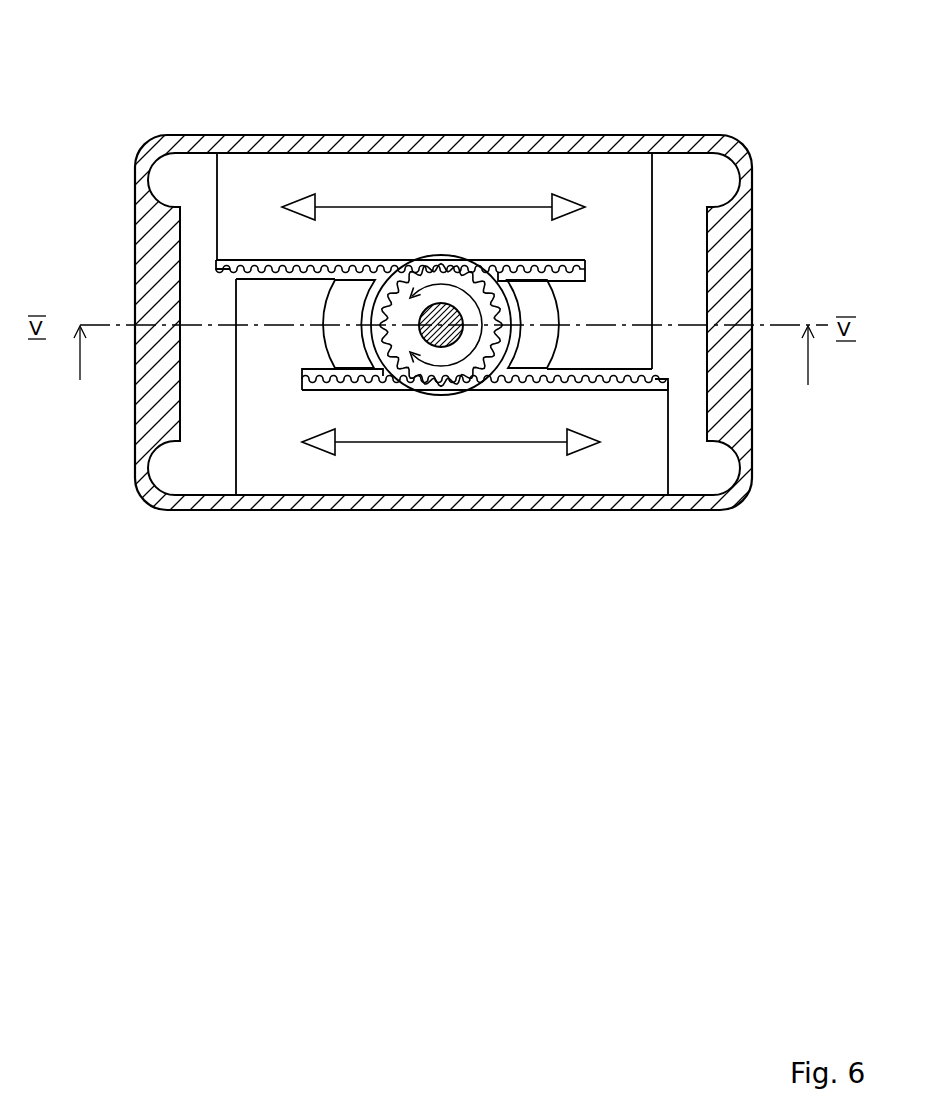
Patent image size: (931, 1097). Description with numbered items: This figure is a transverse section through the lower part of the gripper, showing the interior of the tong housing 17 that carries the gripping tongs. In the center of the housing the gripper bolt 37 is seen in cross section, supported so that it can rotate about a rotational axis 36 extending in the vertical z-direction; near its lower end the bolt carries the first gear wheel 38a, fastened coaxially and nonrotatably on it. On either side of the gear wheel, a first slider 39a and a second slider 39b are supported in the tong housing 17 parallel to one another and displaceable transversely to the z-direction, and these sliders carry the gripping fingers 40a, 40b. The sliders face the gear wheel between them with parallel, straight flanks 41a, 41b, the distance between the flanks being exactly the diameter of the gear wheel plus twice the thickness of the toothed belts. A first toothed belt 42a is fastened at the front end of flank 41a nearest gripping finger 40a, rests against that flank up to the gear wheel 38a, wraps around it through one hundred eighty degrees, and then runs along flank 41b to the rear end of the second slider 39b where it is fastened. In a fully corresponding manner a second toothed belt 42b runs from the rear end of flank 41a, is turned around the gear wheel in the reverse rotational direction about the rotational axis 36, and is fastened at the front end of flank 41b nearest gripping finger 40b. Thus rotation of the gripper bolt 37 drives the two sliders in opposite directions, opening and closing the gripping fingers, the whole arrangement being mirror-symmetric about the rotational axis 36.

The tong housing 17 is at (404, 362).
The rotational axis 36 is at (385, 433).
The gripper bolt 37 is at (565, 456).
The first gear wheel 38a is at (538, 483).
The first slider 39a is at (452, 480).
The second slider 39b is at (434, 201).
The gripping finger 40a is at (251, 460).
The gripping finger 40b is at (621, 199).
The flank 41a is at (485, 525).
The flank 41b is at (400, 152).
The first toothed belt 42a is at (192, 152).
The second toothed belt 42b is at (741, 490).